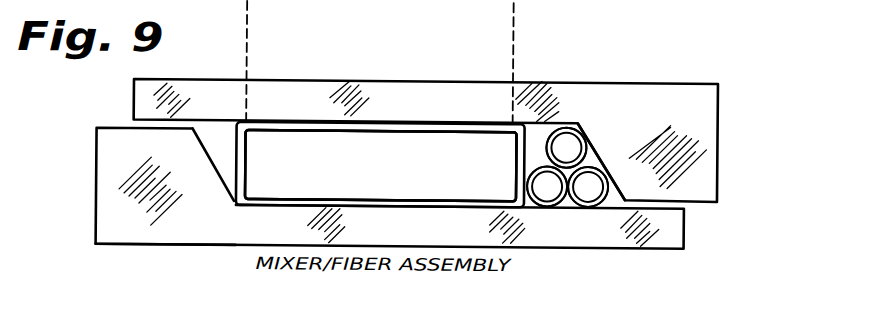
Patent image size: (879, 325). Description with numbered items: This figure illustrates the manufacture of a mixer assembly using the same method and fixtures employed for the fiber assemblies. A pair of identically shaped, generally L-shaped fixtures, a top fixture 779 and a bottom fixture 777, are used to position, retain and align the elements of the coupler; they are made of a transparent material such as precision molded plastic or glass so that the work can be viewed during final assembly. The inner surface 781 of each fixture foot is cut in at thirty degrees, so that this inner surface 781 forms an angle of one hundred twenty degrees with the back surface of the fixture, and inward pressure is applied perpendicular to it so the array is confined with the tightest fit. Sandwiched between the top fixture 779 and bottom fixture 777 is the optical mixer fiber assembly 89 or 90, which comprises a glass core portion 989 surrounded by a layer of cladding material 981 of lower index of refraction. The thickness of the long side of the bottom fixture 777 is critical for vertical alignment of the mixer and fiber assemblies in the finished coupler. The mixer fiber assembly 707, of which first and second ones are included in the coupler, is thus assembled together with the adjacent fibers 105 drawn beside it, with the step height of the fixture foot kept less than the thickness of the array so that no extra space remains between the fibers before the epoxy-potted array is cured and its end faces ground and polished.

The top fixture 779 is at (718, 128).
The bottom fixture 777 is at (685, 228).
The inner surface of foot 781 is at (209, 155).
The glass core portion 989 is at (234, 199).
The layer of cladding material 981 is at (259, 174).
The optical mixer fiber assembly 89 is at (388, 172).
The optical mixer fiber assembly 90 is at (428, 172).
The mixer fiber assembly 707 is at (543, 307).
The optical fibers 105 is at (550, 183).